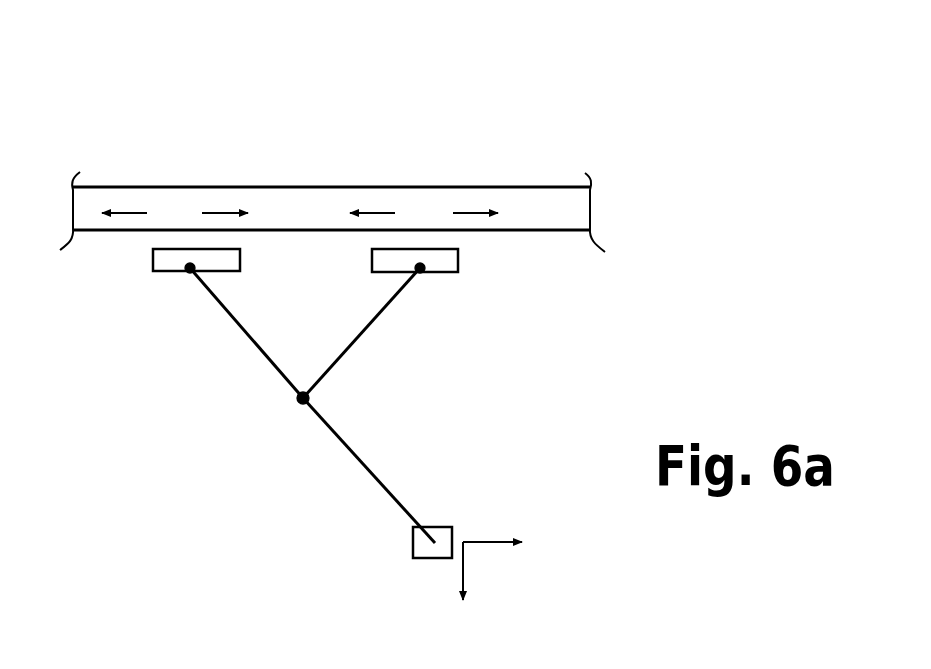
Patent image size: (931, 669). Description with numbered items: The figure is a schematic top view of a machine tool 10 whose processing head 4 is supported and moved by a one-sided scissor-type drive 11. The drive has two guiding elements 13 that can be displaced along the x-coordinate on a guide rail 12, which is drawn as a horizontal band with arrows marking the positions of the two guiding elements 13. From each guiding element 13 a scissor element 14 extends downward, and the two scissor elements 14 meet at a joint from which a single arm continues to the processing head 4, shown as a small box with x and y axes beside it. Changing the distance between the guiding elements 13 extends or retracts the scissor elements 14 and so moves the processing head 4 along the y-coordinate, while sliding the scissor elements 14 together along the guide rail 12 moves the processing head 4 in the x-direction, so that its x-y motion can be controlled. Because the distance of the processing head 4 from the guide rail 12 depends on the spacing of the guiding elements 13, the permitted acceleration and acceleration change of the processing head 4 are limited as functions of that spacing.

The machine tool 10 is at (168, 158).
The guide rail 12 is at (527, 202).
The guiding elements 13 is at (170, 259).
The one-sided scissor-type drive 11 is at (267, 450).
The scissor elements 14 is at (357, 458).
The processing head 4 is at (443, 527).